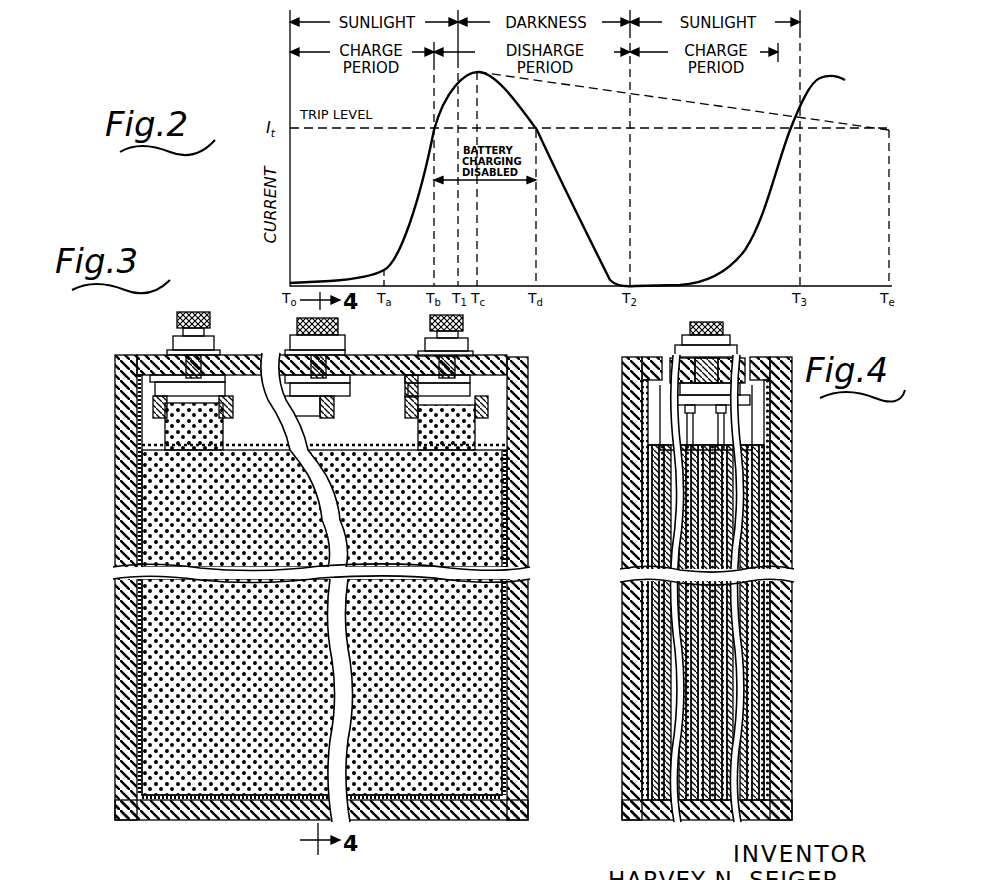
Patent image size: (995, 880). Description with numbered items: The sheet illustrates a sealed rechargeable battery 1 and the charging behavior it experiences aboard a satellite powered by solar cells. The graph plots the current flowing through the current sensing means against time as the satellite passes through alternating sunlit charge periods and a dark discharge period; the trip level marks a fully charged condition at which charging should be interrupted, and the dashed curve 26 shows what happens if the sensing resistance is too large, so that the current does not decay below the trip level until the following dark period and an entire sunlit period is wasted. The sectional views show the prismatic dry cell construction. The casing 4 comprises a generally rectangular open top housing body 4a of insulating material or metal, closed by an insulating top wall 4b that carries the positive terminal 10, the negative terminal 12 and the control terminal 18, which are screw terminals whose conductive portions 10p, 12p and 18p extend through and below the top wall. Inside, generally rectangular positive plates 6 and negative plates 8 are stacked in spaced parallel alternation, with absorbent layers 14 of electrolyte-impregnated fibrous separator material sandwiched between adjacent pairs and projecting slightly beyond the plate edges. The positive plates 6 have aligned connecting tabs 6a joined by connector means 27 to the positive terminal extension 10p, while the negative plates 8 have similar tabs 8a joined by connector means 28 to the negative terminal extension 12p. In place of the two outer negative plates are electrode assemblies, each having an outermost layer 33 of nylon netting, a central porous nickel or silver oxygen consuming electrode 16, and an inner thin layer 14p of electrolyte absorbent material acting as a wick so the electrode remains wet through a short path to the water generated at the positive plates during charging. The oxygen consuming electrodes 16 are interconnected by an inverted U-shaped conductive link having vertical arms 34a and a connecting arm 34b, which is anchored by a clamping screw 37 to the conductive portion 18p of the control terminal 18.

In FIG. 3, the chargeable sealed battery 1 is at (95, 818).
In FIG. 3, the casing 4 is at (108, 622).
In FIG. 3, the housing body 4a is at (118, 678).
In FIG. 3, the top wall 4b is at (240, 355).
In FIG. 4, the positive battery plates 6 is at (660, 682).
In FIG. 3, the connecting tabs 6a is at (125, 420).
In FIG. 3, the negative battery plates 8 is at (498, 486).
In FIG. 4, the negative battery plates 8 is at (680, 506).
In FIG. 3, the tabs 8a is at (475, 428).
In FIG. 4, the tabs 8a is at (660, 430).
In FIG. 3, the positive terminal 10 is at (188, 312).
In FIG. 3, the conductive portion 10p is at (140, 375).
In FIG. 3, the negative terminal 12 is at (465, 322).
In FIG. 3, the conductive portion 12p is at (505, 378).
In FIG. 3, the absorbent layers 14 is at (503, 522).
In FIG. 4, the absorbent layers 14 is at (652, 740).
In FIG. 4, the thin layer of electrolyte absorbent material 14p is at (648, 607).
In FIG. 4, the oxygen consuming electrodes 16 is at (645, 650).
In FIG. 3, the control terminal 18 is at (298, 327).
In FIG. 4, the control terminal 18 is at (716, 326).
In FIG. 3, the conductive portion 18p is at (322, 355).
In FIG. 2, the dashed curve 26 is at (755, 100).
In FIG. 3, the connector means 27 is at (130, 396).
In FIG. 3, the connector means 28 is at (418, 410).
In FIG. 4, the connector means 28 is at (660, 397).
In FIG. 4, the outermost layer 33 is at (650, 618).
In FIG. 3, the vertical arms 34a is at (405, 405).
In FIG. 4, the vertical arms 34a is at (660, 380).
In FIG. 3, the connecting arm 34b is at (405, 375).
In FIG. 4, the connecting arm 34b is at (680, 342).
In FIG. 3, the clamping screw 37 is at (320, 386).
In FIG. 4, the clamping screw 37 is at (742, 366).